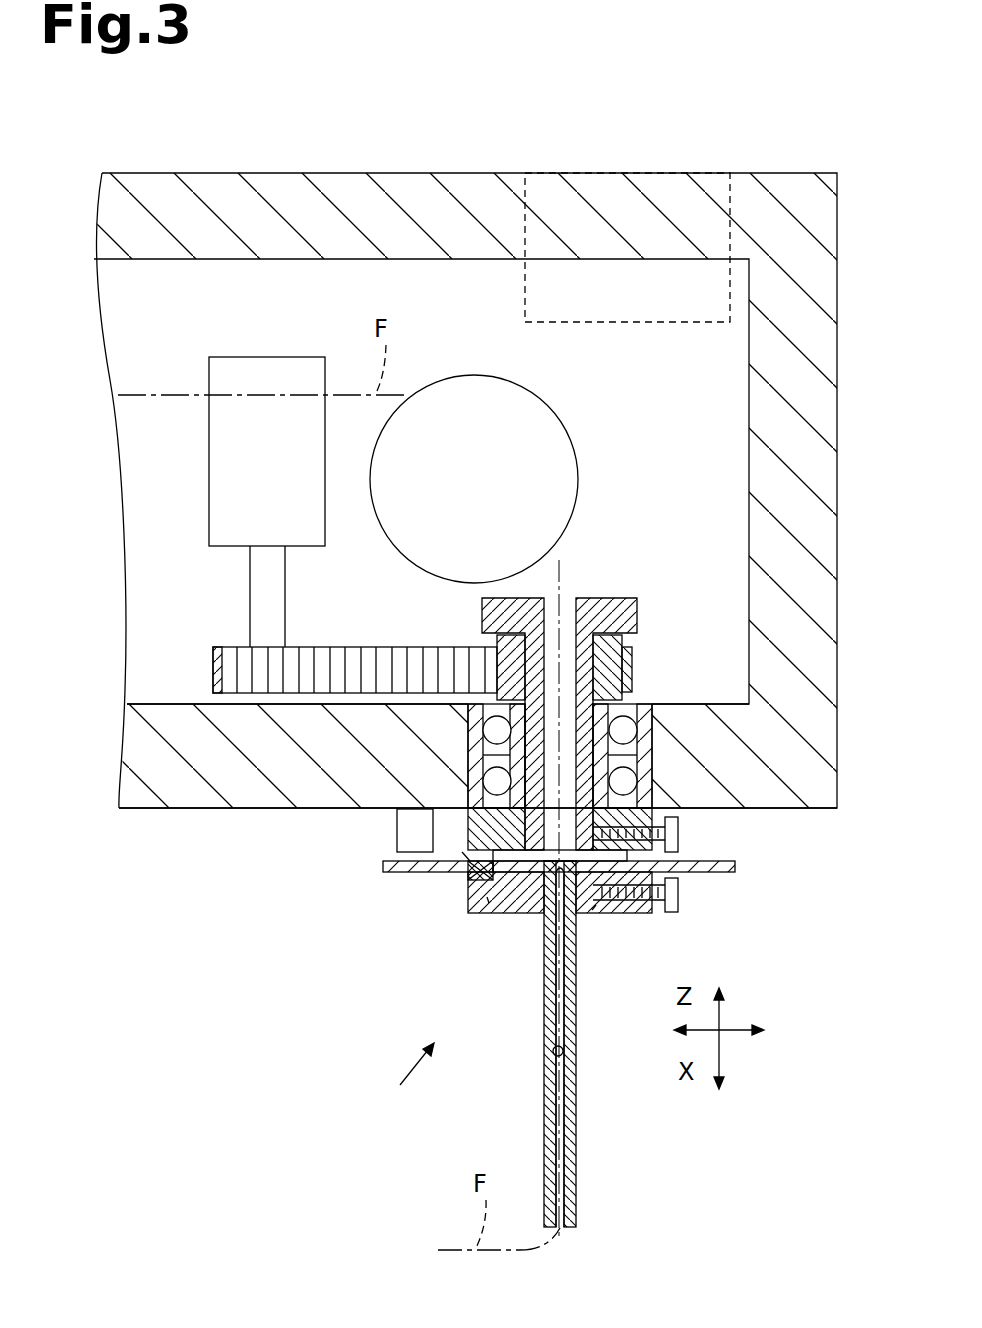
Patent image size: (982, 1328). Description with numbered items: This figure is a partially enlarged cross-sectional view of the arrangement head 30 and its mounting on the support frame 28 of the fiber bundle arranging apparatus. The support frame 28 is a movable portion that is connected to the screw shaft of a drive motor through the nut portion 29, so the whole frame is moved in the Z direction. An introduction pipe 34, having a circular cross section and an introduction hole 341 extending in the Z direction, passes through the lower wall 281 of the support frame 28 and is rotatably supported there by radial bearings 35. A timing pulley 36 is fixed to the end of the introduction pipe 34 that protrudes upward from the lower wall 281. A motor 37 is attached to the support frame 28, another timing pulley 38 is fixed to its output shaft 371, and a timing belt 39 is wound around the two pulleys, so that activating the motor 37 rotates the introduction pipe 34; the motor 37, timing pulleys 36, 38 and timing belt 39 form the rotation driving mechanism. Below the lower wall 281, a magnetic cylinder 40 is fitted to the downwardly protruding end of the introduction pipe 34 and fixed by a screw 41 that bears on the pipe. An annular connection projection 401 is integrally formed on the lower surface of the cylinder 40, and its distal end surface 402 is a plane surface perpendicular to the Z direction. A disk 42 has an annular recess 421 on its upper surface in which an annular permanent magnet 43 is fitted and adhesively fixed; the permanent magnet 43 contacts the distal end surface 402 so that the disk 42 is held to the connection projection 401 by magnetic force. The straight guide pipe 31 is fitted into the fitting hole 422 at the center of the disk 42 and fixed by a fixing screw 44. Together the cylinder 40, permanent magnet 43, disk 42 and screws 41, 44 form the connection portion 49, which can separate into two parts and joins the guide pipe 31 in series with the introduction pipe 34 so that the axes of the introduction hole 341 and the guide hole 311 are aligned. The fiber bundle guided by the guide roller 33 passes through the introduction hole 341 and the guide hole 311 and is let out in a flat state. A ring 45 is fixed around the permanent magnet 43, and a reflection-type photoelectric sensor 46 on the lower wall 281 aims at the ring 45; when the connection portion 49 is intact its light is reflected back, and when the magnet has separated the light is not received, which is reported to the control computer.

The support frame 28 is at (465, 493).
The lower wall 281 is at (206, 805).
The nut portion 29 is at (525, 287).
The arrangement head 30 is at (399, 1077).
The guide pipe 31 is at (572, 1012).
The guide hole 311 is at (563, 1054).
The guide roller 33 is at (570, 452).
The introduction pipe 34 is at (635, 617).
The introduction hole 341 is at (566, 612).
The radial bearings 35 is at (630, 785).
The timing pulley 36 is at (612, 660).
The motor 37 is at (273, 365).
The output shaft 371 is at (256, 580).
The timing pulley 38 is at (243, 660).
The timing belt 39 is at (362, 660).
The magnetic cylinder 40 is at (655, 812).
The connection projection 401 is at (467, 858).
The distal end surface 402 is at (463, 874).
The screw 41 is at (678, 833).
The disk 42 is at (620, 913).
The annular recess 421 is at (487, 897).
The fitting hole 422 is at (592, 910).
The annular permanent magnet 43 is at (663, 864).
The fixing screw 44 is at (678, 897).
The ring 45 is at (397, 872).
The photoelectric sensor 46 is at (409, 818).
The connection portion 49 is at (671, 885).